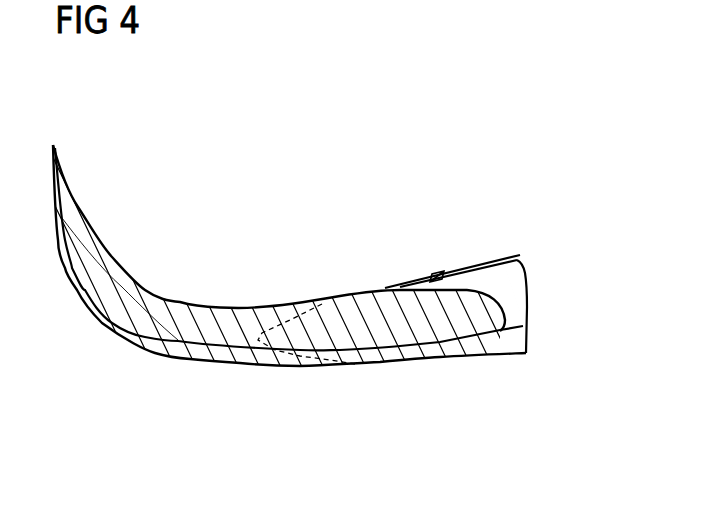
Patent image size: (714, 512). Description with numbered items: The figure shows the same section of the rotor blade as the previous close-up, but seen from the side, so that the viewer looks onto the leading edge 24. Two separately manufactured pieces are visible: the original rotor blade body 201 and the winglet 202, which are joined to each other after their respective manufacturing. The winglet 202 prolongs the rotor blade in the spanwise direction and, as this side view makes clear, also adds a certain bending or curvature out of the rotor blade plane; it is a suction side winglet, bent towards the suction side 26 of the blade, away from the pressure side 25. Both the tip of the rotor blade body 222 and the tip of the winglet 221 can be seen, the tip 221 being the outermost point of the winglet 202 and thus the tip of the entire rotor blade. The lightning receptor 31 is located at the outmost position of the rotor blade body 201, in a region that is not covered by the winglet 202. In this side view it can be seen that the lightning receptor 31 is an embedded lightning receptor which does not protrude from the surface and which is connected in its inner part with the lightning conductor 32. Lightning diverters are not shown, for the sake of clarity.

The tip 221 is at (53, 144).
The winglet 202 is at (203, 310).
The suction side 26 is at (273, 307).
The pressure side 25 is at (155, 354).
The tip of the rotor blade body 222 is at (255, 337).
The lightning receptor 31 is at (434, 273).
The lightning conductor 32 is at (520, 256).
The rotor blade body 201 is at (517, 302).
The leading edge 24 is at (508, 344).